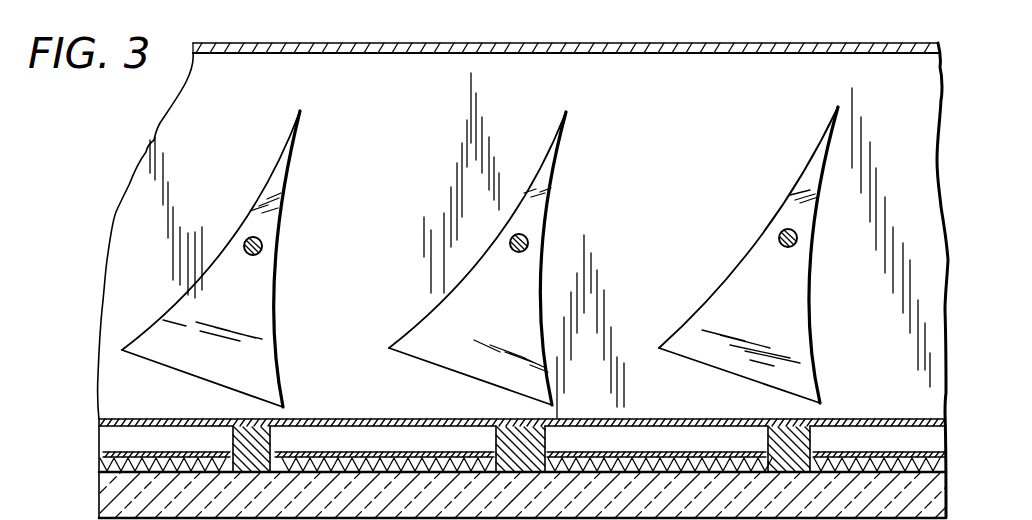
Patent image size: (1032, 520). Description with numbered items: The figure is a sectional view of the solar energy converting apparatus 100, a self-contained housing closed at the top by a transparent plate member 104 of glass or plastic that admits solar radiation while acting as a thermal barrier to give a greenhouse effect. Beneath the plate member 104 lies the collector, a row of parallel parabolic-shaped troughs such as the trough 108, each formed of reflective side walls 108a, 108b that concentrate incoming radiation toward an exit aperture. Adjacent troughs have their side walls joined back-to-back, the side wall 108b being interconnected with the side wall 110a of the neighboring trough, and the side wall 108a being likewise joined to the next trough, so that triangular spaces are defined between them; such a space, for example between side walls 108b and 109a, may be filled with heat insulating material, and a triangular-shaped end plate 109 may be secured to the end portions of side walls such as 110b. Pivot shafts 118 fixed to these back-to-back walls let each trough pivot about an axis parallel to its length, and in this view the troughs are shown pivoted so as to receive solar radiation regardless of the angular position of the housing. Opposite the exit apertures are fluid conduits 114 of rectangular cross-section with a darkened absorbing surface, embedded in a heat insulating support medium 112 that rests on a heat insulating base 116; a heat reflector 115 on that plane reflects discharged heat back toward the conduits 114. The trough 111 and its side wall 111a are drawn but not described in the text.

The solar energy converting apparatus 100 is at (457, 39).
The transparent plate member 104 is at (258, 43).
The parabolic-shaped trough 108 is at (251, 259).
The side wall 108a is at (291, 163).
The side wall 108b is at (544, 153).
The triangular-shaped end plate 109 is at (510, 258).
The side wall 109a is at (474, 377).
The side wall 110a is at (553, 180).
The side wall 110b is at (789, 196).
The third cantilever beam element 111 is at (748, 255).
The base of third beam element 111a is at (741, 378).
The heat insulating support medium 112 is at (243, 419).
The fluid conduits 114 is at (337, 400).
The heat reflector 115 is at (566, 462).
The base 116 is at (878, 487).
The pivot shafts 118 is at (255, 256).